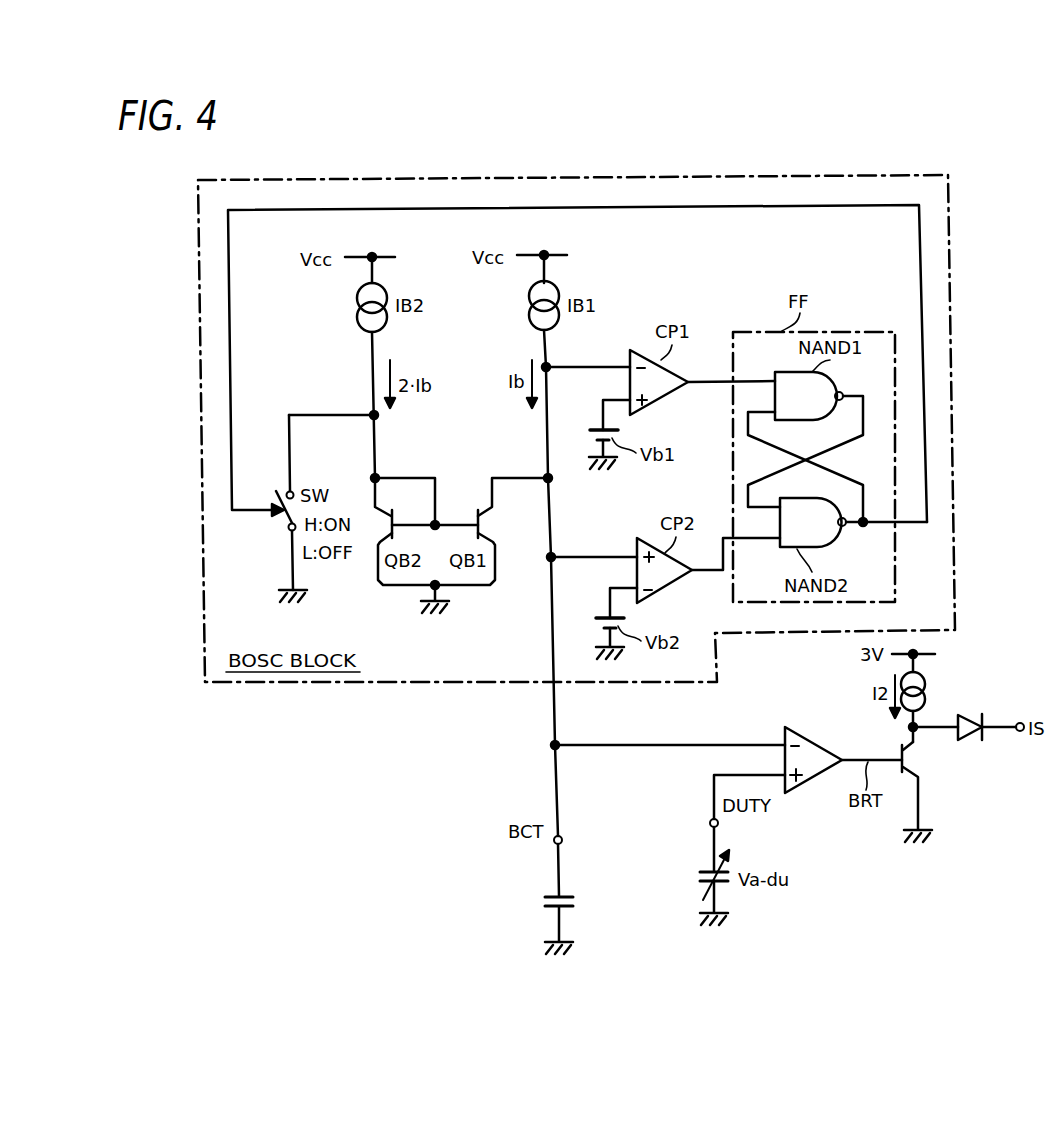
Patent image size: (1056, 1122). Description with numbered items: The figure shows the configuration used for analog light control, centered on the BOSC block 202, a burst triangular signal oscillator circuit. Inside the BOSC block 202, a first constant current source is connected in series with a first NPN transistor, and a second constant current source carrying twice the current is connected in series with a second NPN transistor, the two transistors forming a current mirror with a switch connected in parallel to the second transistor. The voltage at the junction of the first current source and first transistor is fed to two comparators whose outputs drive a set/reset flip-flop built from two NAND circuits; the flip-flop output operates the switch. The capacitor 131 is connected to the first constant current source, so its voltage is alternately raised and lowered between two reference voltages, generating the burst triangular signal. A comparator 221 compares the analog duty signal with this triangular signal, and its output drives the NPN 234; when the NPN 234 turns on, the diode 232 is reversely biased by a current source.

The BOSC block 202 is at (955, 318).
The capacitor 131 is at (543, 901).
The comparator 221 is at (818, 741).
The diode 232 is at (983, 702).
The NPN 234 is at (906, 750).